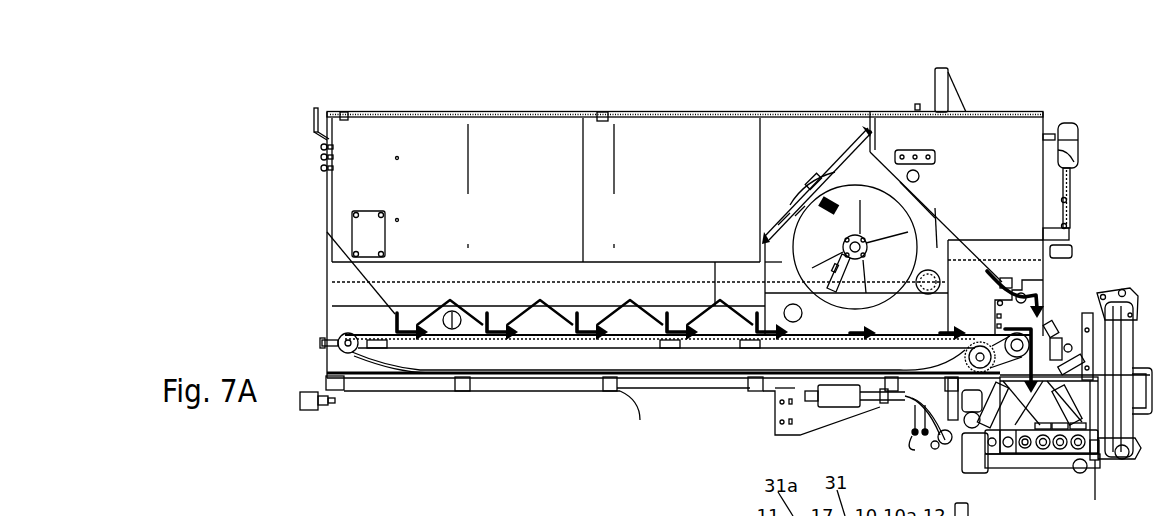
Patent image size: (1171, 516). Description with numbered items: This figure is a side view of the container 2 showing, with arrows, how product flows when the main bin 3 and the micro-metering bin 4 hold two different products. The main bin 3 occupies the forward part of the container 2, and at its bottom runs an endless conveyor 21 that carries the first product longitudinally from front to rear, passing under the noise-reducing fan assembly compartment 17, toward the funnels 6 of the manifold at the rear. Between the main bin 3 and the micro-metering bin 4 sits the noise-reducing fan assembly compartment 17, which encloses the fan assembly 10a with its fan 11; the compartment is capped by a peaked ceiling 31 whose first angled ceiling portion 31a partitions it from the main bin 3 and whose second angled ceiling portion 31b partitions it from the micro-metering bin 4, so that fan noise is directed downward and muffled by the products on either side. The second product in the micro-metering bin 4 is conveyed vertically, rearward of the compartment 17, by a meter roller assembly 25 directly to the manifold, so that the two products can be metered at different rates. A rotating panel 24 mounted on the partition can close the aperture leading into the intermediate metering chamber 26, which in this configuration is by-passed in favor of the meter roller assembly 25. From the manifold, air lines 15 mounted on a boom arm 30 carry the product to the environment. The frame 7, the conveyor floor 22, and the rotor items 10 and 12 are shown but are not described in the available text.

The container 2 is at (326, 188).
The main bin 3 is at (430, 133).
The micro-metering bin 4 is at (1007, 133).
The funnels 6 is at (1028, 448).
The frame 7 is at (620, 382).
The rotor 10 is at (868, 173).
The fan assembly 10a is at (855, 247).
The rotor drive 12 is at (868, 232).
The fan 11 is at (813, 237).
The air lines 15 is at (1045, 447).
The noise-reducing fan assembly compartment 17 is at (853, 175).
The endless conveyor 21 is at (407, 365).
The conveyor floor 22 is at (467, 327).
The rotating panel 24 is at (1008, 282).
The meter roller assembly 25 is at (1026, 298).
The intermediate metering chamber 26 is at (966, 280).
The boom arm 30 is at (1068, 448).
The peaked ceiling 31 is at (872, 136).
The first angled ceiling portion 31a is at (823, 168).
The second angled ceiling portion 31b is at (925, 200).